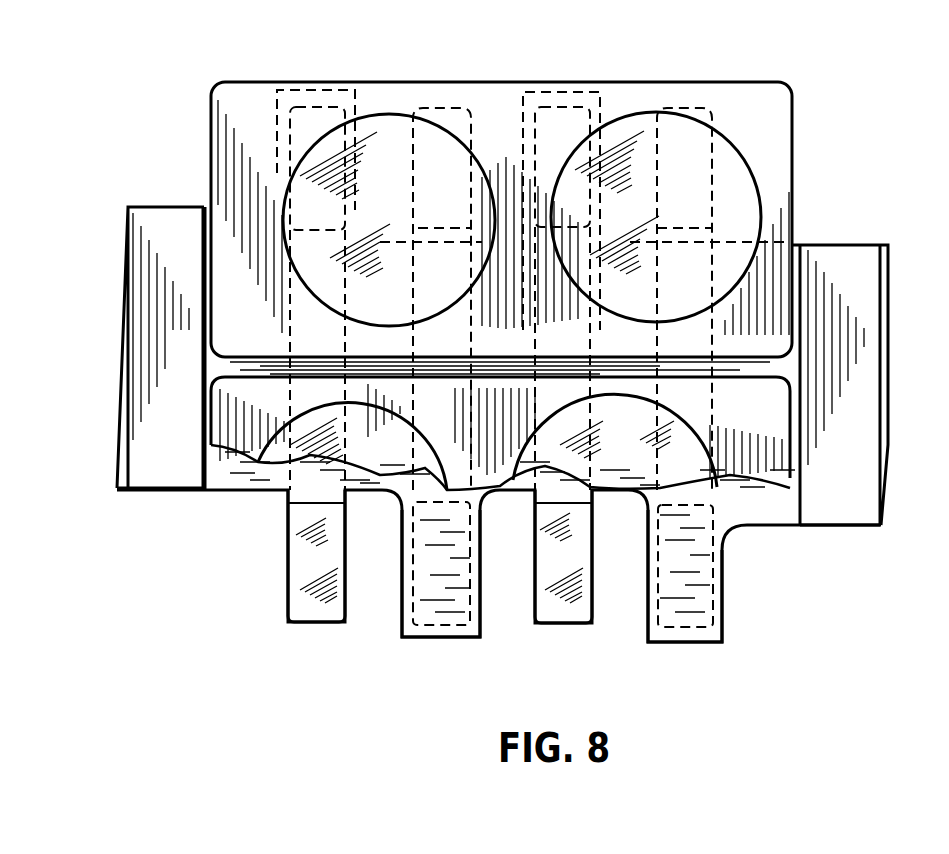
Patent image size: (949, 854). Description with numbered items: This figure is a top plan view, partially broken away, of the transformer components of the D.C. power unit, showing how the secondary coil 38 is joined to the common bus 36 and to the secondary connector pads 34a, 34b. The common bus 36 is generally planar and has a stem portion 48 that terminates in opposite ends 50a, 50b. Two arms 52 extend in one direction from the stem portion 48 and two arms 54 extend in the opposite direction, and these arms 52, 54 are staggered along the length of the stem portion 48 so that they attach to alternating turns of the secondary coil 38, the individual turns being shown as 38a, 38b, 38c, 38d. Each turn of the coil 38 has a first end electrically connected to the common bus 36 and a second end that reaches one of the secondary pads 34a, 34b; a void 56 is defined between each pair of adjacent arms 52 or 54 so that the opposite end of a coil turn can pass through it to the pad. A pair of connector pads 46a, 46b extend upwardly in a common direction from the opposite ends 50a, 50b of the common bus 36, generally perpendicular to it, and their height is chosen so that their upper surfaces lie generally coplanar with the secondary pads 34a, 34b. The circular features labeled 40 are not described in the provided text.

The secondary connector pad 34a is at (757, 102).
The secondary connector pad 34b is at (770, 423).
The common bus 36 is at (768, 532).
The secondary coil 38 is at (266, 592).
The secondary coil turn 38a is at (313, 614).
The secondary coil turn 38b is at (448, 632).
The secondary coil turn 38c is at (570, 615).
The secondary coil turn 38d is at (718, 615).
The circular recesses 40 is at (392, 120).
The connector pad 46a is at (850, 512).
The connector pad 46b is at (150, 480).
The stem portion 48 is at (790, 234).
The end of stem portion 50a is at (888, 266).
The end of stem portion 50b is at (128, 318).
The arms 52 is at (466, 630).
The arms 54 is at (308, 88).
The void 56 is at (494, 150).